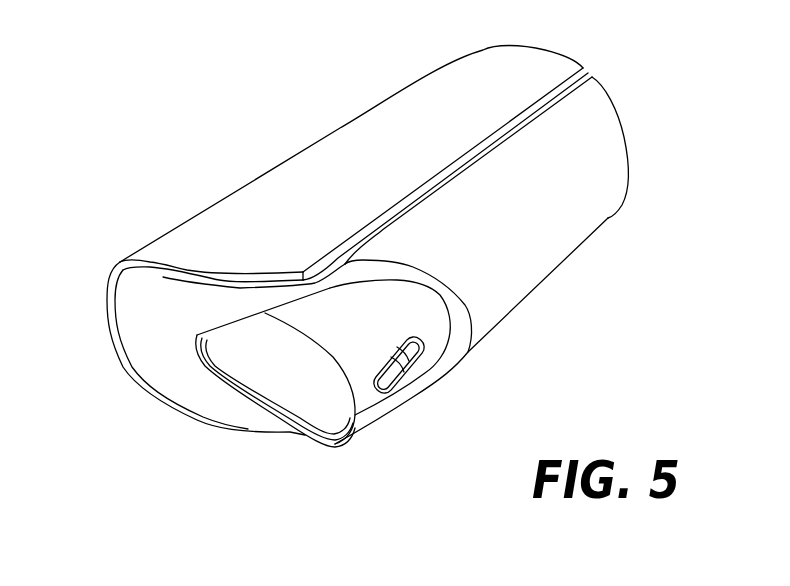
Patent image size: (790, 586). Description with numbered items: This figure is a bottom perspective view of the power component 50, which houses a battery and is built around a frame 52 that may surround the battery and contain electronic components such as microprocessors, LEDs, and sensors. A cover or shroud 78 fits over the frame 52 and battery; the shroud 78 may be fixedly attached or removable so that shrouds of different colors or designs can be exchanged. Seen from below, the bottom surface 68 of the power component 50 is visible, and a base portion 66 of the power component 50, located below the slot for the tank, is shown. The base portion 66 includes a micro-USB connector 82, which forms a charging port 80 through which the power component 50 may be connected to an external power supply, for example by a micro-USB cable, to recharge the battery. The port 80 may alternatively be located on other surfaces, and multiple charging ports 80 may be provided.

The power component 50 is at (254, 102).
The frame 52 is at (597, 212).
The base portion 66 is at (367, 402).
The bottom surface 68 is at (460, 327).
The shroud 78 is at (255, 203).
The port 80 is at (408, 344).
The micro-USB connector 82 is at (395, 358).